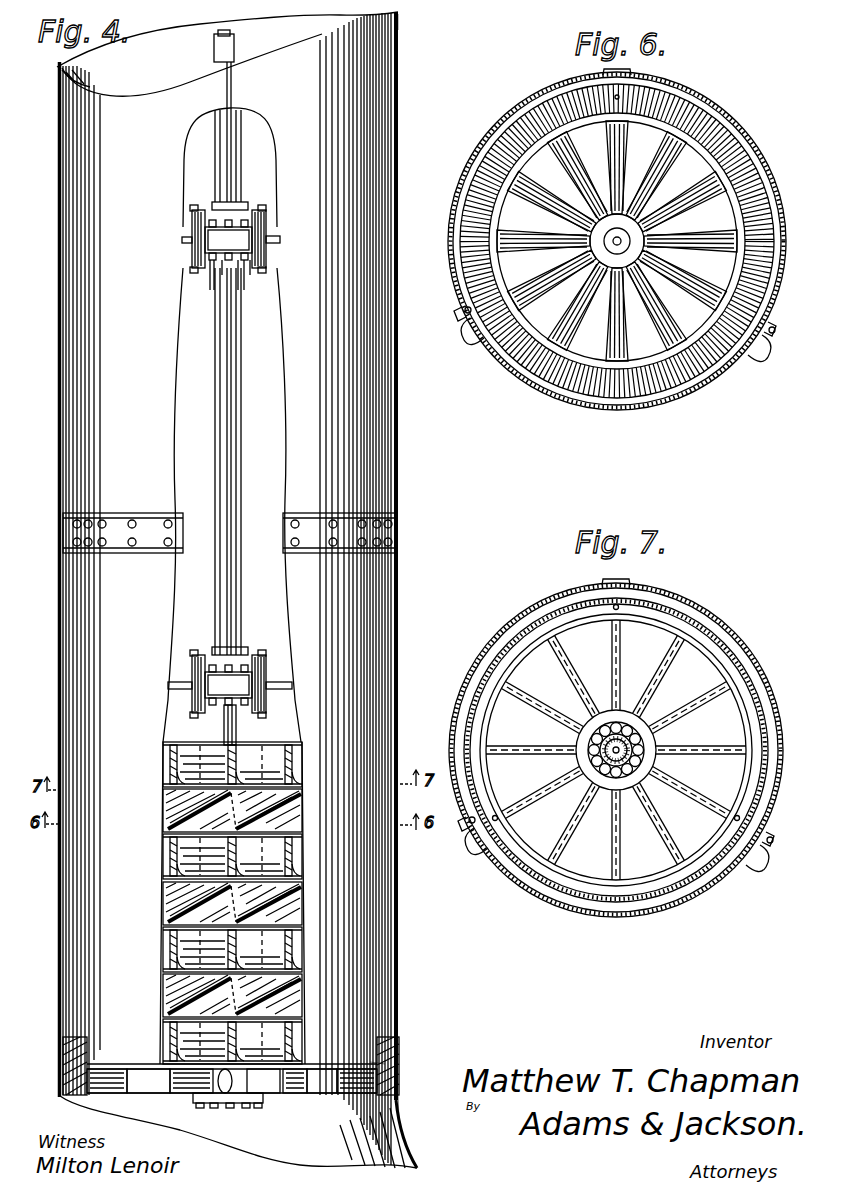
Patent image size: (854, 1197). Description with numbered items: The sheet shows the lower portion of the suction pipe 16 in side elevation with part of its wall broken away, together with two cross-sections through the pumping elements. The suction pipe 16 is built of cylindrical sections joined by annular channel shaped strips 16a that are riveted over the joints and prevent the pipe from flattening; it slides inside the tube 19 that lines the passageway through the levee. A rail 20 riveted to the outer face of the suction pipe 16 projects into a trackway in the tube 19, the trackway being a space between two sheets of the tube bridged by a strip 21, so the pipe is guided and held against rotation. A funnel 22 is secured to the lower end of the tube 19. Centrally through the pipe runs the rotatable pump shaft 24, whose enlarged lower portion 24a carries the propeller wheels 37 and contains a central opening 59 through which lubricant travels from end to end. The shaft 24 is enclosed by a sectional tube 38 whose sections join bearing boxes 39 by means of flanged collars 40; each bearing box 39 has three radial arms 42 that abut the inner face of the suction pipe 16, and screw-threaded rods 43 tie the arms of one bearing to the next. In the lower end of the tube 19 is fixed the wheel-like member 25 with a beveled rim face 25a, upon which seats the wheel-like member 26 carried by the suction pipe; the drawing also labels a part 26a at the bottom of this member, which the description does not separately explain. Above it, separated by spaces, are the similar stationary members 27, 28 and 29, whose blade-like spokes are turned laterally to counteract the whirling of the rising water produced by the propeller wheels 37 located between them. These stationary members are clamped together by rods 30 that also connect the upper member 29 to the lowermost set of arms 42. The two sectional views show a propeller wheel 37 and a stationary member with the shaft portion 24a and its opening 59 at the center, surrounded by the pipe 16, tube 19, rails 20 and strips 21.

In FIG. 4, the suction pipe 16 is at (265, 60).
In FIG. 6, the suction pipe 16 is at (490, 170).
In FIG. 7, the suction pipe 16 is at (492, 666).
In FIG. 4, the annular channel shaped strips 16a is at (355, 550).
In FIG. 4, the tube 19 is at (397, 82).
In FIG. 6, the tube 19 is at (486, 140).
In FIG. 7, the tube 19 is at (478, 690).
In FIG. 6, the rail 20 is at (478, 346).
In FIG. 7, the rail 20 is at (474, 838).
In FIG. 6, the strip 21 is at (462, 312).
In FIG. 7, the strip 21 is at (772, 832).
In FIG. 4, the funnel 22 is at (416, 1130).
In FIG. 4, the pump shaft 24 is at (232, 559).
In FIG. 6, the enlarged lower shaft portion 24a is at (606, 246).
In FIG. 7, the enlarged lower shaft portion 24a is at (605, 752).
In FIG. 4, the wheel-like member 25 is at (231, 1078).
In FIG. 4, the beveled rim face 25a is at (388, 1062).
In FIG. 4, the lower stationary member 26 is at (195, 1040).
In FIG. 4, the spoke / shaft end 26a is at (236, 1058).
In FIG. 7, the spoke / shaft end 26a is at (664, 836).
In FIG. 4, the intermediate stationary member 27 is at (185, 942).
In FIG. 4, the intermediate stationary member 28 is at (185, 856).
In FIG. 4, the upper stationary member 29 is at (185, 760).
In FIG. 7, the upper stationary member 29 is at (592, 887).
In FIG. 4, the rods 30 is at (228, 727).
In FIG. 6, the rods 30 is at (640, 95).
In FIG. 7, the rods 30 is at (618, 606).
In FIG. 4, the propeller wheels 37 is at (185, 810).
In FIG. 6, the propeller wheels 37 is at (700, 255).
In FIG. 4, the tube 38 is at (213, 47).
In FIG. 4, the bearing boxes 39 is at (200, 250).
In FIG. 4, the flanged collars 40 is at (192, 213).
In FIG. 4, the radial arms 42 is at (270, 240).
In FIG. 4, the screw-threaded rods 43 is at (232, 180).
In FIG. 7, the central opening 59 is at (628, 738).